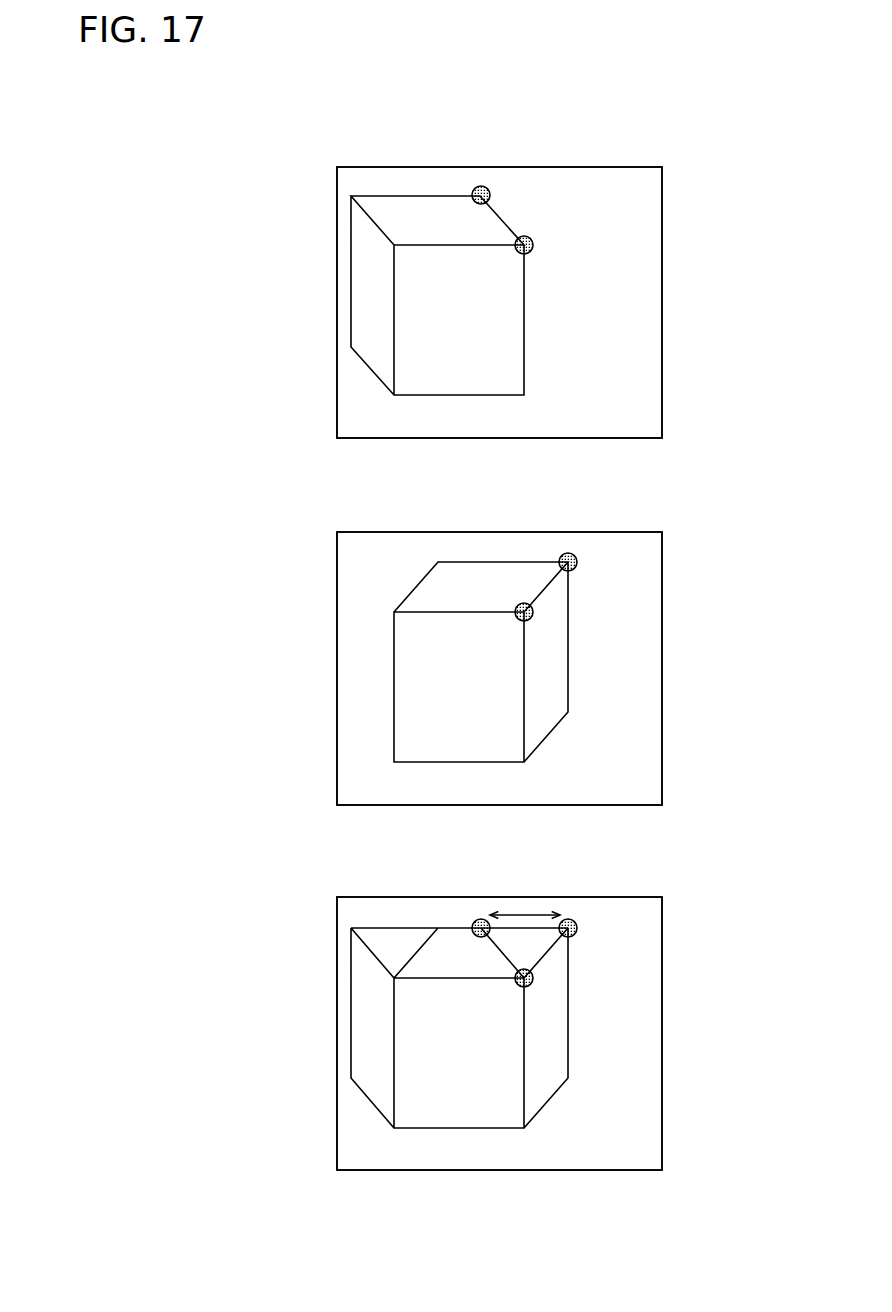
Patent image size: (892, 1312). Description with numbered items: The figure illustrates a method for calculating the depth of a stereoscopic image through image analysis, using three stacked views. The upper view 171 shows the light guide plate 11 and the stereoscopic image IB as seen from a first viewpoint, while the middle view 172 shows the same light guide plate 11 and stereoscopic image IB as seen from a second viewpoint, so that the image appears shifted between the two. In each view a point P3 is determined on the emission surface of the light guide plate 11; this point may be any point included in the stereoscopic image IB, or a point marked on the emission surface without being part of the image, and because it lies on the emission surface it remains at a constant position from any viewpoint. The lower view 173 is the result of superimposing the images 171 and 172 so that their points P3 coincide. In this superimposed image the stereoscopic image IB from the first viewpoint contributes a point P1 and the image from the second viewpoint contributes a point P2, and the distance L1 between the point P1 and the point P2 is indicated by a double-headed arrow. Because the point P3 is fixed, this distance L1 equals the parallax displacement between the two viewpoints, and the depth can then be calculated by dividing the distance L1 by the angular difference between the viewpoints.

The light guide plate 11 is at (662, 387).
The stereoscopic image IB is at (532, 303).
The point P1 is at (481, 186).
The point P2 is at (569, 552).
The point P3 is at (533, 245).
The distance L1 is at (524, 912).
The image viewed from viewpoint E1 171 is at (727, 162).
The image viewed from viewpoint E2 172 is at (727, 527).
The superimposed image 173 is at (727, 892).